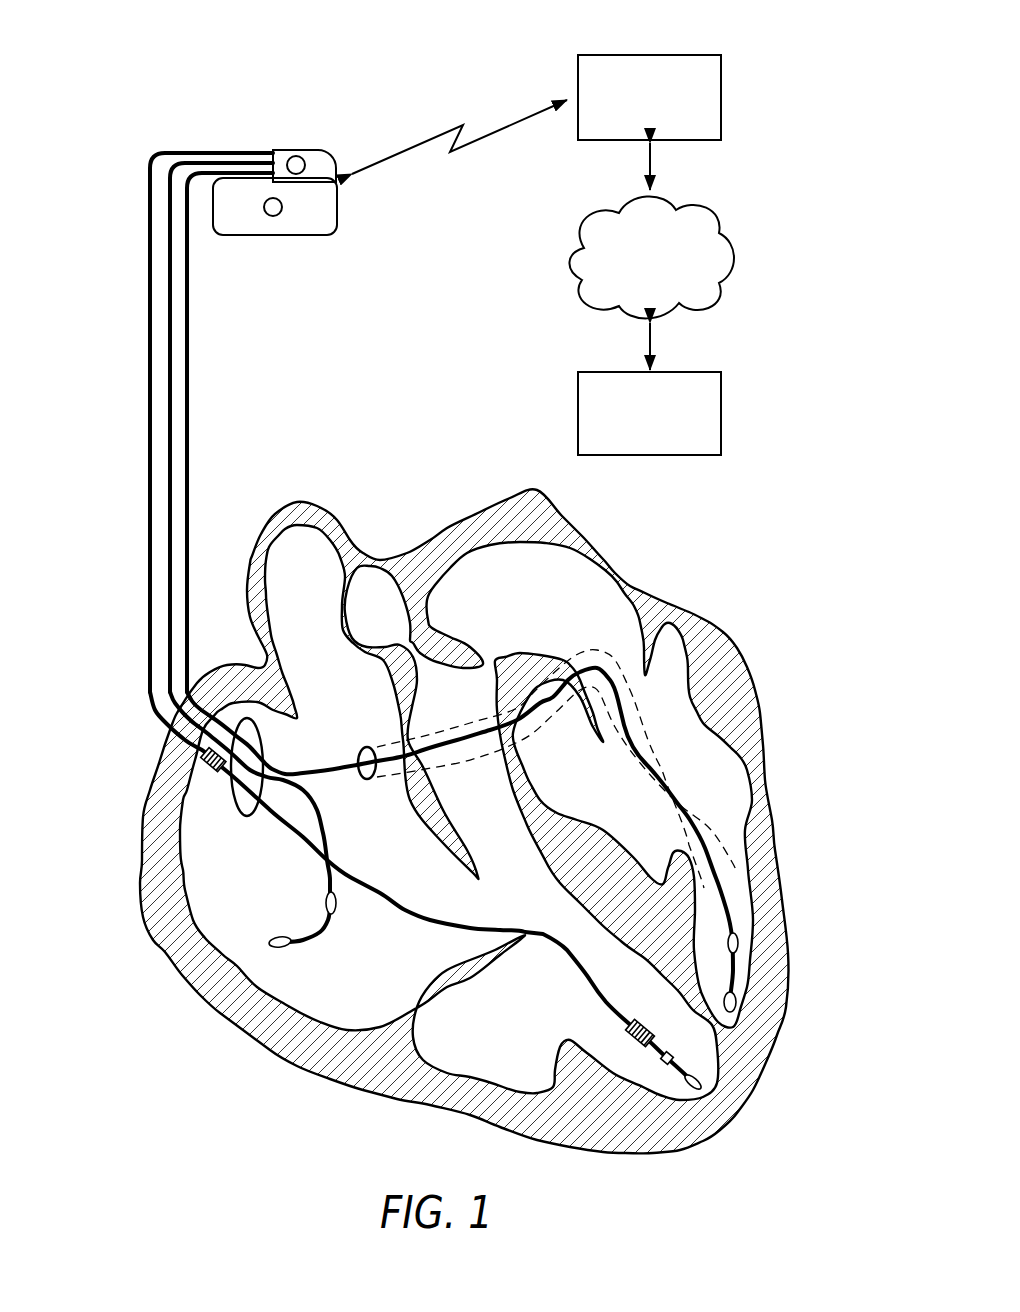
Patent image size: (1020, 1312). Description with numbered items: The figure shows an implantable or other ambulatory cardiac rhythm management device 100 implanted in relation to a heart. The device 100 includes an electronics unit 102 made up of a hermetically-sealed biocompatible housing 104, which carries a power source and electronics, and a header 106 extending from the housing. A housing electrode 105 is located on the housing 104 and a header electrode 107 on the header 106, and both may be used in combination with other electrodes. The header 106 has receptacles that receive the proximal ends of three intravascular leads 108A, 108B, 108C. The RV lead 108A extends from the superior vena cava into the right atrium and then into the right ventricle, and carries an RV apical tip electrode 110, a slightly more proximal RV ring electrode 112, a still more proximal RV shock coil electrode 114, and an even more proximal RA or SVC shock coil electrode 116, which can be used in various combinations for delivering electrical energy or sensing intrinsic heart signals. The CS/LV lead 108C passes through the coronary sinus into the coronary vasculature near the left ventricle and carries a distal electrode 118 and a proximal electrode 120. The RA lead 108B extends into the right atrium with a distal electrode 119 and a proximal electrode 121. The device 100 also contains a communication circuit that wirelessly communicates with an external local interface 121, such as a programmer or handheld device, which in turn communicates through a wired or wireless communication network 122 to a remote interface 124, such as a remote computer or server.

The cardiac rhythm management device 100 is at (146, 110).
The electronics unit 102 is at (305, 197).
The housing 104 is at (340, 204).
The housing electrode 105 is at (269, 210).
The header 106 is at (330, 159).
The header electrode 107 is at (297, 157).
The RV lead 108A is at (148, 214).
The RA lead 108B is at (168, 252).
The CS/LV lead 108C is at (185, 291).
The RV apical tip electrode 110 is at (692, 1088).
The RV ring electrode 112 is at (665, 1064).
The RV shock coil electrode 114 is at (628, 1047).
The RA or SVC shock coil electrode 116 is at (213, 771).
The distal electrode 118 is at (738, 1002).
The distal electrode 119 is at (273, 936).
The proximal electrode 120 is at (739, 931).
The local interface 121 is at (337, 905).
The communication network 122 is at (713, 212).
The remote interface 124 is at (680, 372).